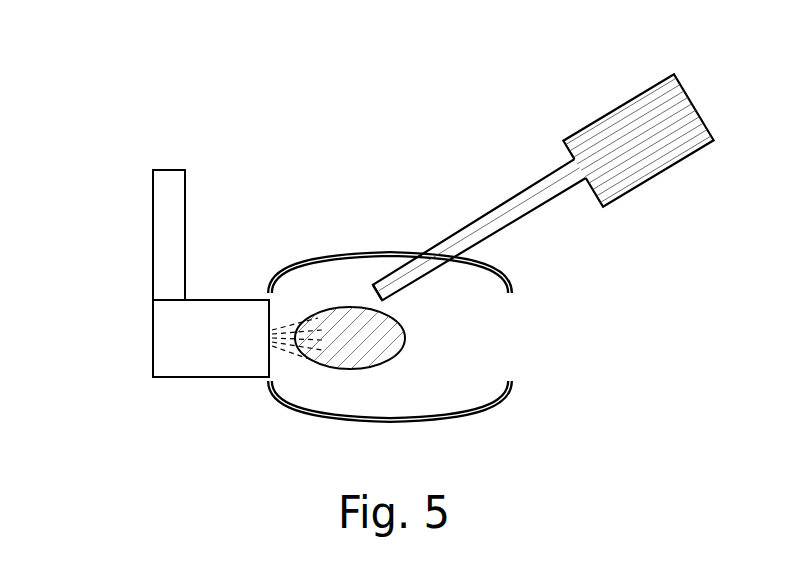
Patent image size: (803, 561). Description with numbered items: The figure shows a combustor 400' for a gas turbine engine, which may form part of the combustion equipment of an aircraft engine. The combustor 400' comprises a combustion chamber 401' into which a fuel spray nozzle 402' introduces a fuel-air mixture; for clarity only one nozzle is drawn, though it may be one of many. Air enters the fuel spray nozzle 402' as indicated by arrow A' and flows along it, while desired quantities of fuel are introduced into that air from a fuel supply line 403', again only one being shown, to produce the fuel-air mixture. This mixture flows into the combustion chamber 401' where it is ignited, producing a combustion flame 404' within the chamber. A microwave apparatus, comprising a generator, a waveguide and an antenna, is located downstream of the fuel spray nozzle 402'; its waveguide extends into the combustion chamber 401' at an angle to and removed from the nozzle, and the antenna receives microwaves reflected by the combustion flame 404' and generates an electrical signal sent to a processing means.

The combustor 400' is at (316, 180).
The combustion chamber 401' is at (368, 300).
The fuel spray nozzle 402' is at (237, 381).
The fuel supply line 403' is at (119, 235).
The combustion flame 404' is at (383, 315).
The arrow indicating air entry A' is at (84, 340).